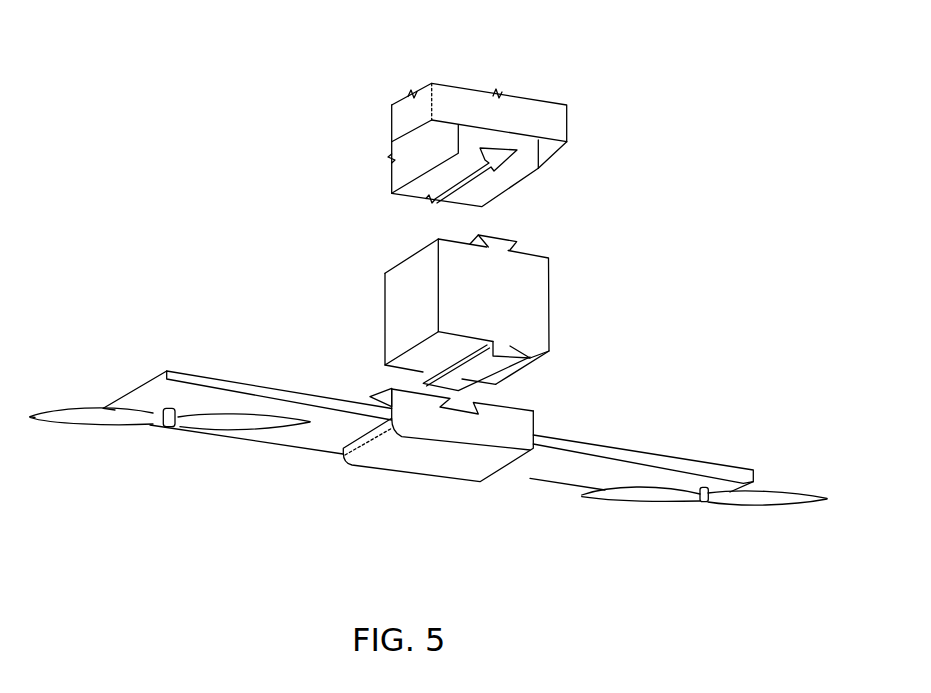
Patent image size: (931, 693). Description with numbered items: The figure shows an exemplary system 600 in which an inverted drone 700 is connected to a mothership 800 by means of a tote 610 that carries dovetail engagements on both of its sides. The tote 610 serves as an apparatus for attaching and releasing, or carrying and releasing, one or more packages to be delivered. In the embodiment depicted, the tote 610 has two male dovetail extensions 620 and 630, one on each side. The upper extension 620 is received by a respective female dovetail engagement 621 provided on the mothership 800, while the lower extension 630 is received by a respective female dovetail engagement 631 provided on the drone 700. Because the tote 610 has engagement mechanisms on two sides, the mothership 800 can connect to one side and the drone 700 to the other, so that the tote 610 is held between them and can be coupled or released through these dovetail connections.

The system 600 is at (328, 70).
The mothership 800 is at (556, 120).
The female dovetail engagement of the mothership 621 is at (507, 155).
The tote 610 is at (550, 302).
The male dovetail extension 620 is at (518, 250).
The male dovetail extension 630 is at (522, 362).
The female dovetail engagement of the drone 631 is at (534, 414).
The drone 700 is at (425, 483).